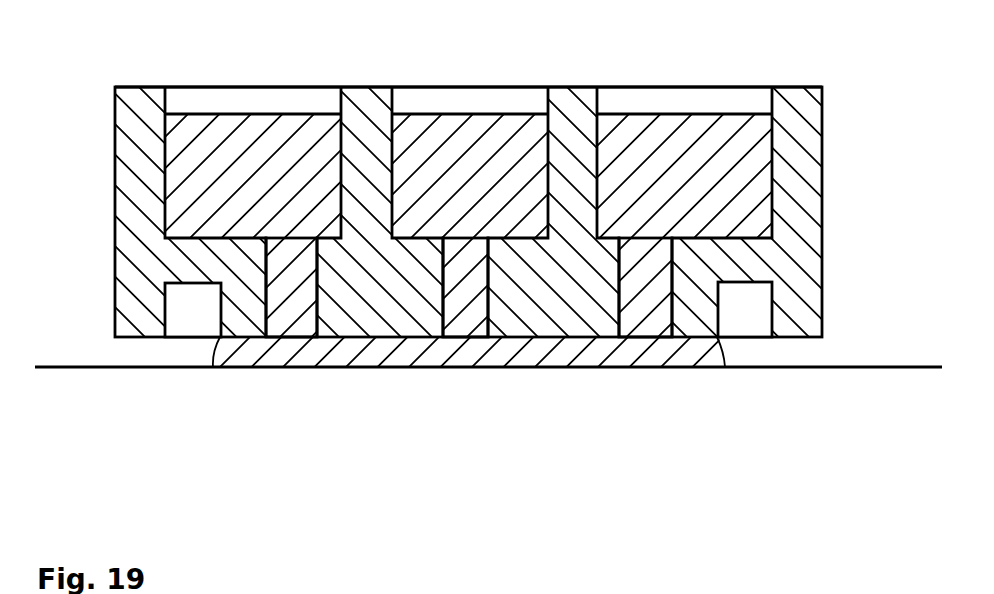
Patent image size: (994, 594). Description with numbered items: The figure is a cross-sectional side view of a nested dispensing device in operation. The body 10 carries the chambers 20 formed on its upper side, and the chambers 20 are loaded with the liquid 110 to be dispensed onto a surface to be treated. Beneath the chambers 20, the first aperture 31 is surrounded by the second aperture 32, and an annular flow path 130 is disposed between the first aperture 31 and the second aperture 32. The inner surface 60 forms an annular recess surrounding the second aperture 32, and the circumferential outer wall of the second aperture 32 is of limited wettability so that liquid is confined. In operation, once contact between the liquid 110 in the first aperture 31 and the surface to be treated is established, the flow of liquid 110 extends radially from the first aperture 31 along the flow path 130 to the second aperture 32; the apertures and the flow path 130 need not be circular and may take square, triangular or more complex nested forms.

The body 10 is at (143, 107).
The chamber 20 is at (443, 87).
The liquid 110 is at (268, 140).
The flow path 130 is at (378, 338).
The first aperture 31 is at (472, 325).
The second aperture 32 is at (284, 325).
The inner surface 60 is at (189, 325).